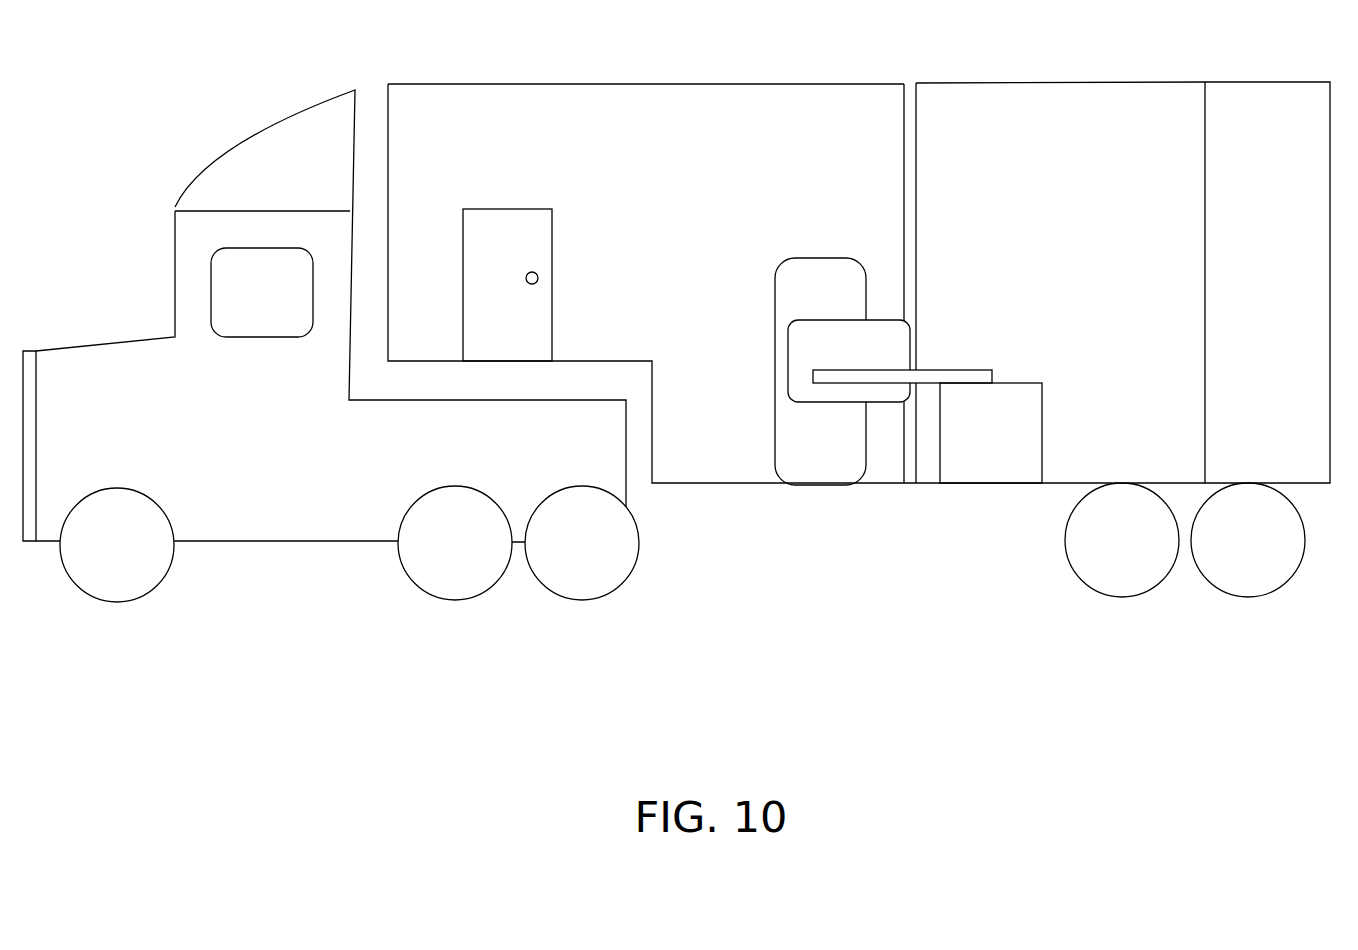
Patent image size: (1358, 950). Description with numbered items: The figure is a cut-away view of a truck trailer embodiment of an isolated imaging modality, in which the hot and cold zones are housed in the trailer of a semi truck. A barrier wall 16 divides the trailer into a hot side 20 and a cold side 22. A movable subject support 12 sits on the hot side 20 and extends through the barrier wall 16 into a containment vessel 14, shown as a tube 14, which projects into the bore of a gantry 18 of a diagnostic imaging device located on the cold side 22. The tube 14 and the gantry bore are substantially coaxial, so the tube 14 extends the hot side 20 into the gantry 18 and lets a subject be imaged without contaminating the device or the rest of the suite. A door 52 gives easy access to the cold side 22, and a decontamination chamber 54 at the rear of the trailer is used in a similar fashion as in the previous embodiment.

The movable subject support 12 is at (1042, 407).
The containment vessel 14 is at (848, 318).
The barrier wall 16 is at (917, 110).
The gantry 18 is at (823, 257).
The hot side 20 is at (1068, 205).
The cold side 22 is at (654, 207).
The door 52 is at (530, 207).
The decontamination chamber 54 is at (1256, 229).